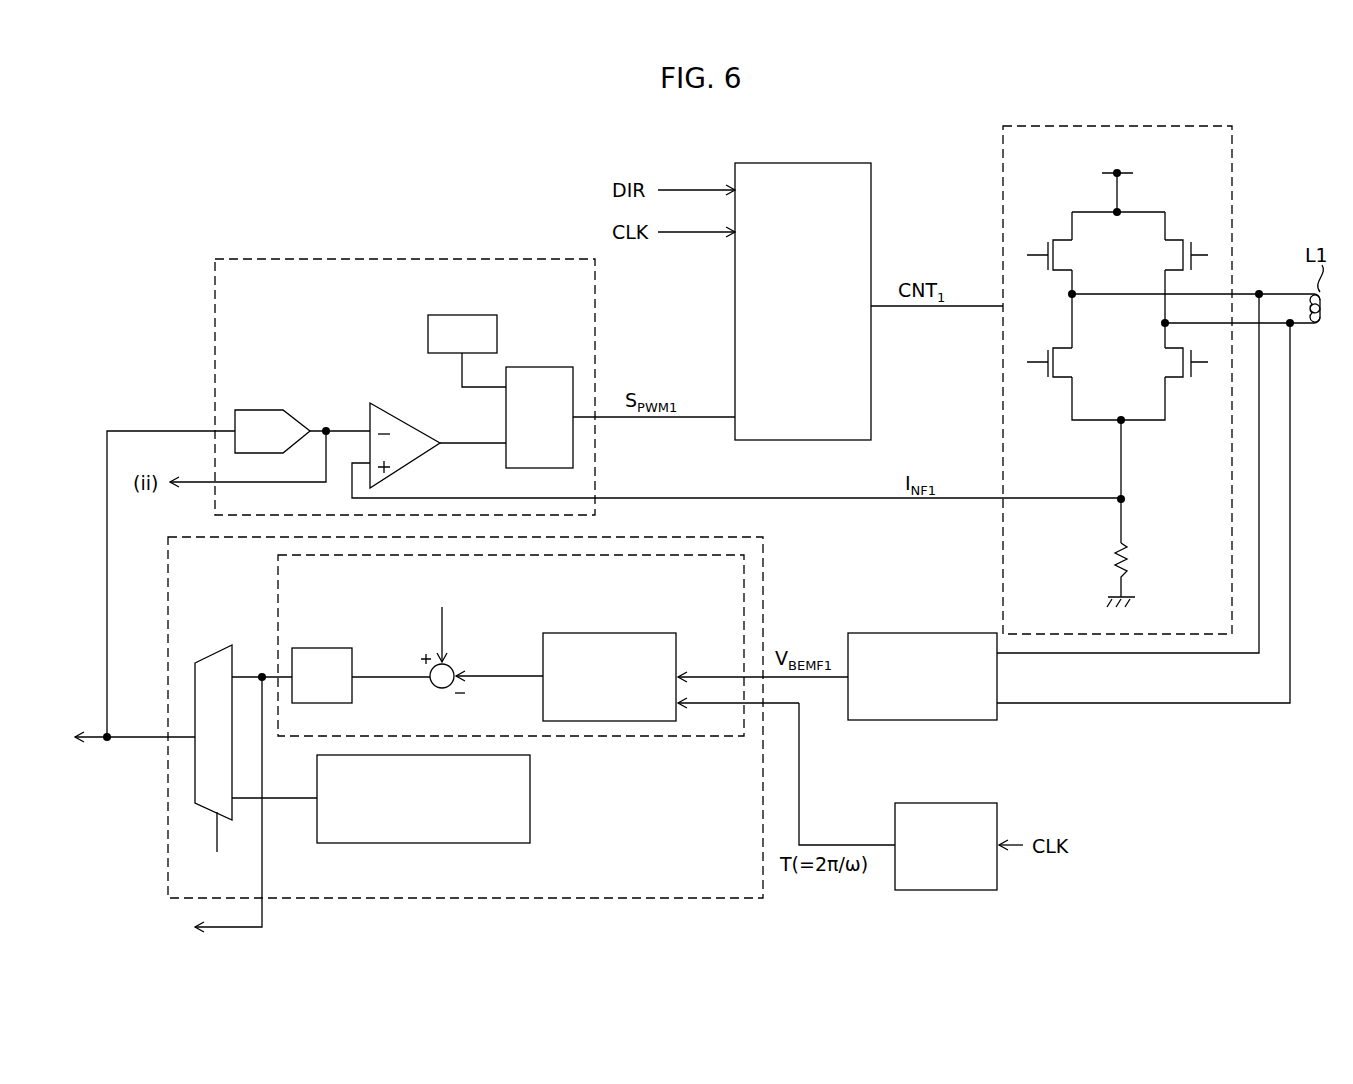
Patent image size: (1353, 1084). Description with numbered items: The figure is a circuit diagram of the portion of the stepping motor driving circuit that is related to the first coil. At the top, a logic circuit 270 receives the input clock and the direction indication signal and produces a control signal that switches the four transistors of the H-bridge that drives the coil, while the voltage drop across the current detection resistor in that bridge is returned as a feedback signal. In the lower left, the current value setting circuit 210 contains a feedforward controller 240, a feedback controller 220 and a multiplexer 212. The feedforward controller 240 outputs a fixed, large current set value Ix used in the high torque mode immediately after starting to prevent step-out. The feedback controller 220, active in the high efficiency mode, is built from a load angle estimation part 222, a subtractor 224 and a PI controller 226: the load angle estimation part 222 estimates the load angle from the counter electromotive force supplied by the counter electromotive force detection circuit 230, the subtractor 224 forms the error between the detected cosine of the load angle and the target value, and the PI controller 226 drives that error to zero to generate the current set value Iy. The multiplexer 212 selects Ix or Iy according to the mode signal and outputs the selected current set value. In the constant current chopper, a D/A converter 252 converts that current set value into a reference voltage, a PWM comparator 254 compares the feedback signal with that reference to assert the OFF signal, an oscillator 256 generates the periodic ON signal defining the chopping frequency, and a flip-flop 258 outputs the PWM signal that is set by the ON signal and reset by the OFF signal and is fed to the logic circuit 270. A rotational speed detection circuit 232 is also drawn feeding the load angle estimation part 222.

The D/A converter 252 is at (245, 409).
The PWM comparator 254 is at (392, 405).
The oscillator 256 is at (490, 295).
The flip-flop 258 is at (556, 346).
The logic circuit 270 is at (808, 163).
The current value setting circuit 210 is at (767, 580).
The multiplexer 212 is at (214, 645).
The feedback controller 220 is at (677, 738).
The load angle estimation part 222 is at (597, 633).
The subtractor 224 is at (447, 666).
The PI controller 226 is at (310, 647).
The counter electromotive force detection circuit 230 is at (912, 633).
The rotational speed detection circuit 232 is at (940, 803).
The feedforward controller 240 is at (530, 798).